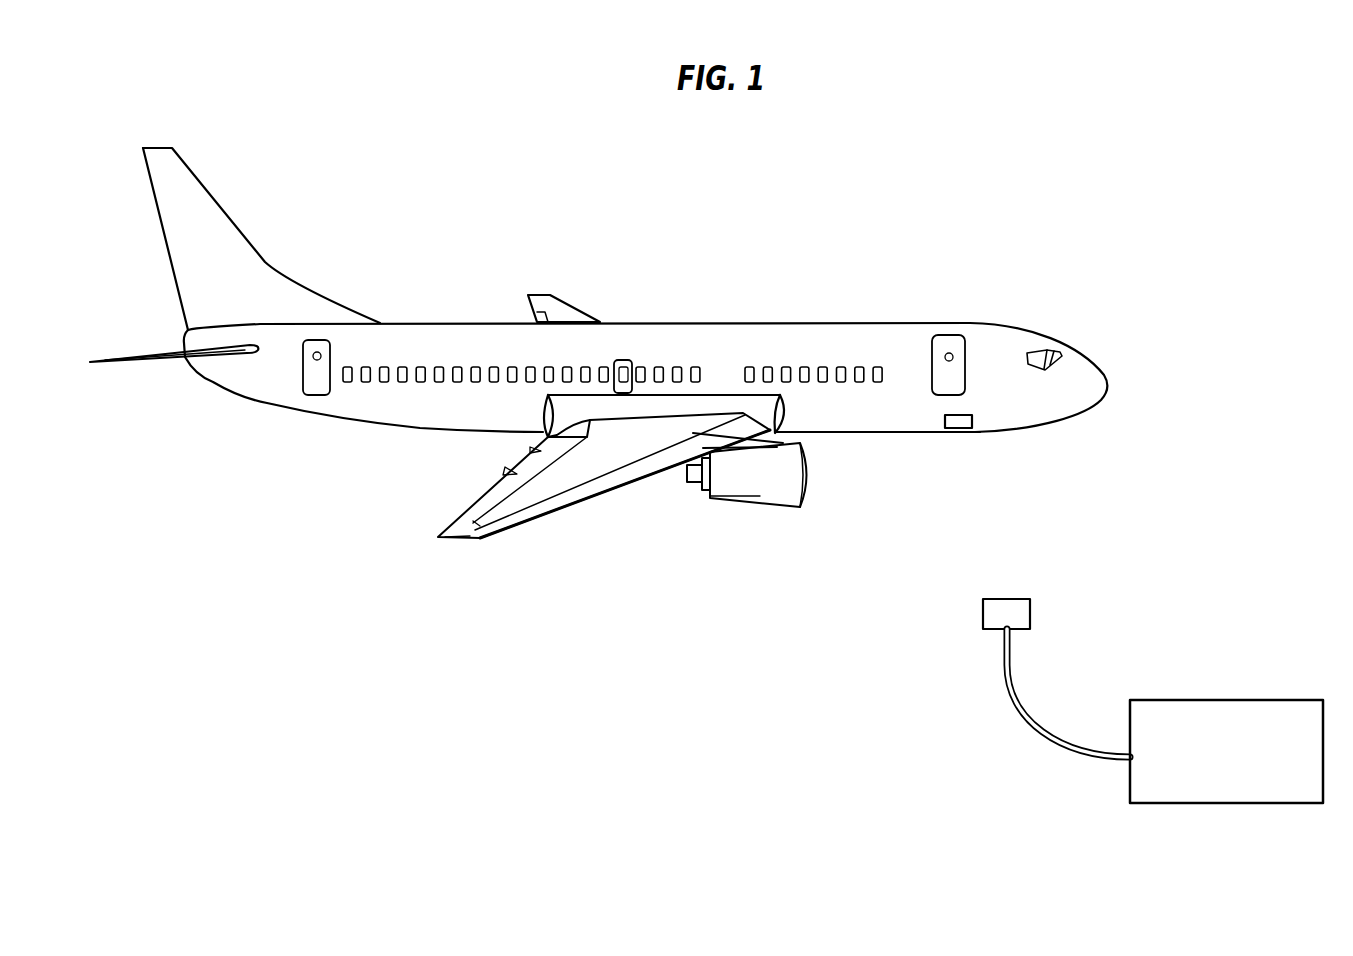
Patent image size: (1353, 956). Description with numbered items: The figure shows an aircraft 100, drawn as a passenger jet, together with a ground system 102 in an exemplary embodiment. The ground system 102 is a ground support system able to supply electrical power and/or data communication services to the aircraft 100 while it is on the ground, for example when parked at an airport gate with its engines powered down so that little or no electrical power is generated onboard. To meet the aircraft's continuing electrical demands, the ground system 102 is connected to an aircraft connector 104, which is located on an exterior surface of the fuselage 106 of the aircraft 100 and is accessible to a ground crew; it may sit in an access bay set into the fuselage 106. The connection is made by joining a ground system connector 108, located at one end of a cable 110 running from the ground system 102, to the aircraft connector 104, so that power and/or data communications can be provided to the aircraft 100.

The aircraft 100 is at (1092, 206).
The ground system 102 is at (1210, 782).
The aircraft connector 104 is at (962, 428).
The fuselage 106 is at (872, 417).
The ground system connector 108 is at (983, 607).
The cable 110 is at (1038, 737).